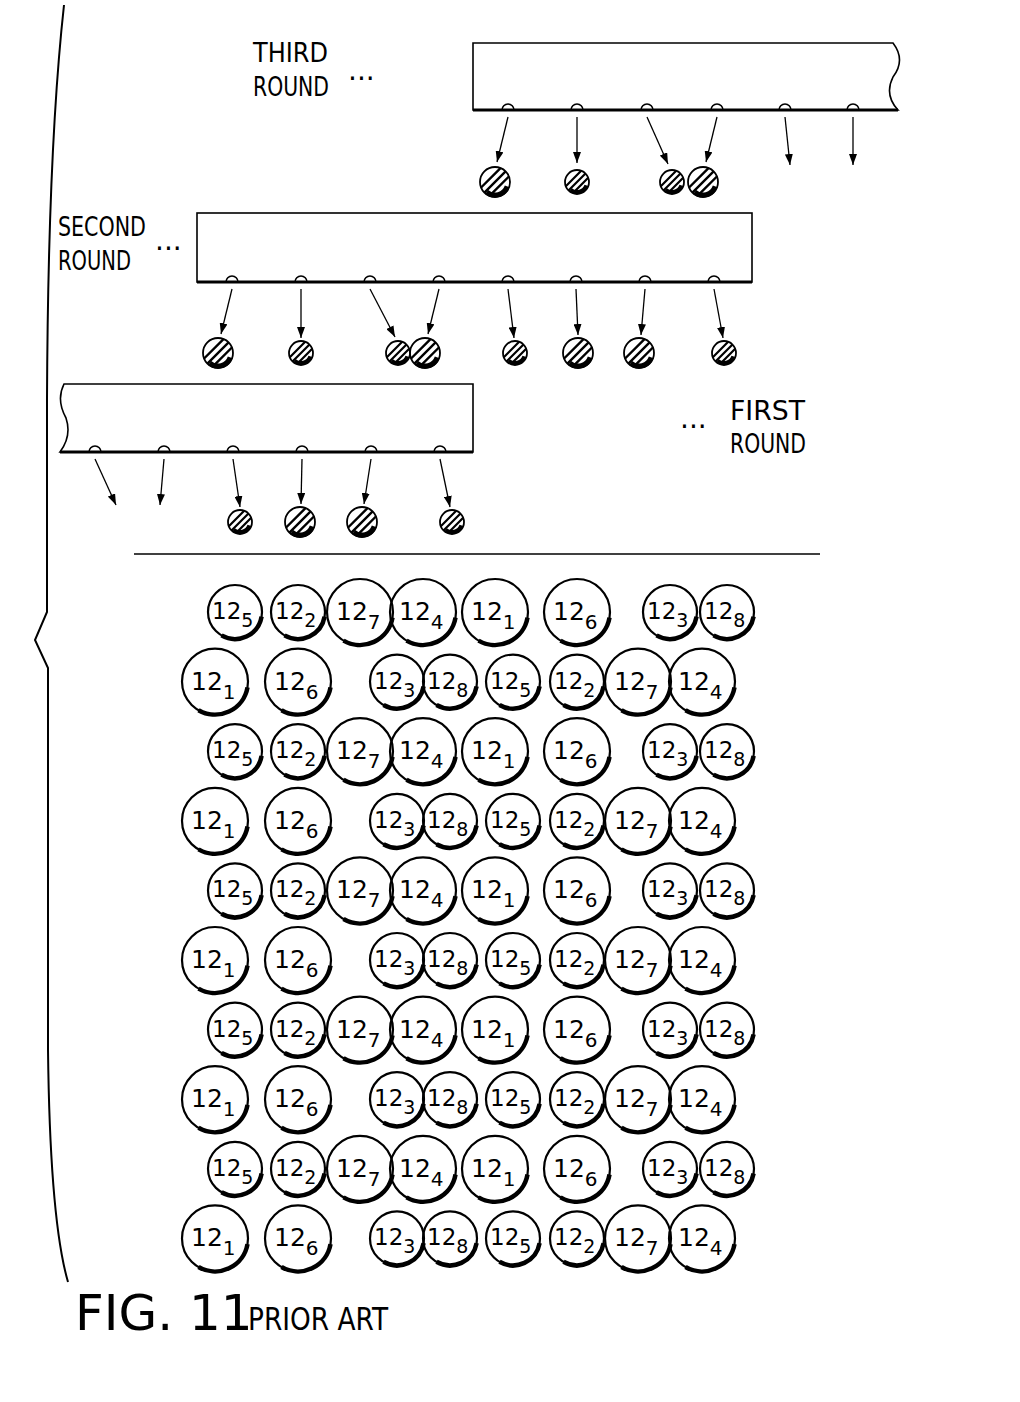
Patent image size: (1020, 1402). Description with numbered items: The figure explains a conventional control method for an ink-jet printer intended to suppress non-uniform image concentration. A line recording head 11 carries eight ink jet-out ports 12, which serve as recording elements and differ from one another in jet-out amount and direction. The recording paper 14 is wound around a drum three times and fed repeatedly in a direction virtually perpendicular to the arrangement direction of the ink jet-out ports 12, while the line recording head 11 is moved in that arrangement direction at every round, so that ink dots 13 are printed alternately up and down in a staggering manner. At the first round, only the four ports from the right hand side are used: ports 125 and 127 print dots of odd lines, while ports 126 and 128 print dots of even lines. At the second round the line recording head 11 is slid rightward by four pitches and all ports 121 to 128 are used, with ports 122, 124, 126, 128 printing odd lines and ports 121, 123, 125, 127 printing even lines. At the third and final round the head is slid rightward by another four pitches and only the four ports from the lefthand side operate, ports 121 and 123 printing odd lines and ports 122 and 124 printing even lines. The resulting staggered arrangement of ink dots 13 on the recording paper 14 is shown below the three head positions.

The line recording head 11 is at (473, 73).
The ink jet-out ports 12 is at (474, 228).
The first ink jet-out port 121 is at (233, 258).
The second ink jet-out port 122 is at (302, 258).
The third ink jet-out port 123 is at (371, 258).
The fourth ink jet-out port 124 is at (440, 258).
The fifth ink jet-out port 125 is at (509, 258).
The sixth ink jet-out port 126 is at (577, 258).
The seventh ink jet-out port 127 is at (646, 258).
The eighth ink jet-out port 128 is at (715, 258).
The ink dots 13 is at (719, 186).
The recording paper 14 is at (788, 575).